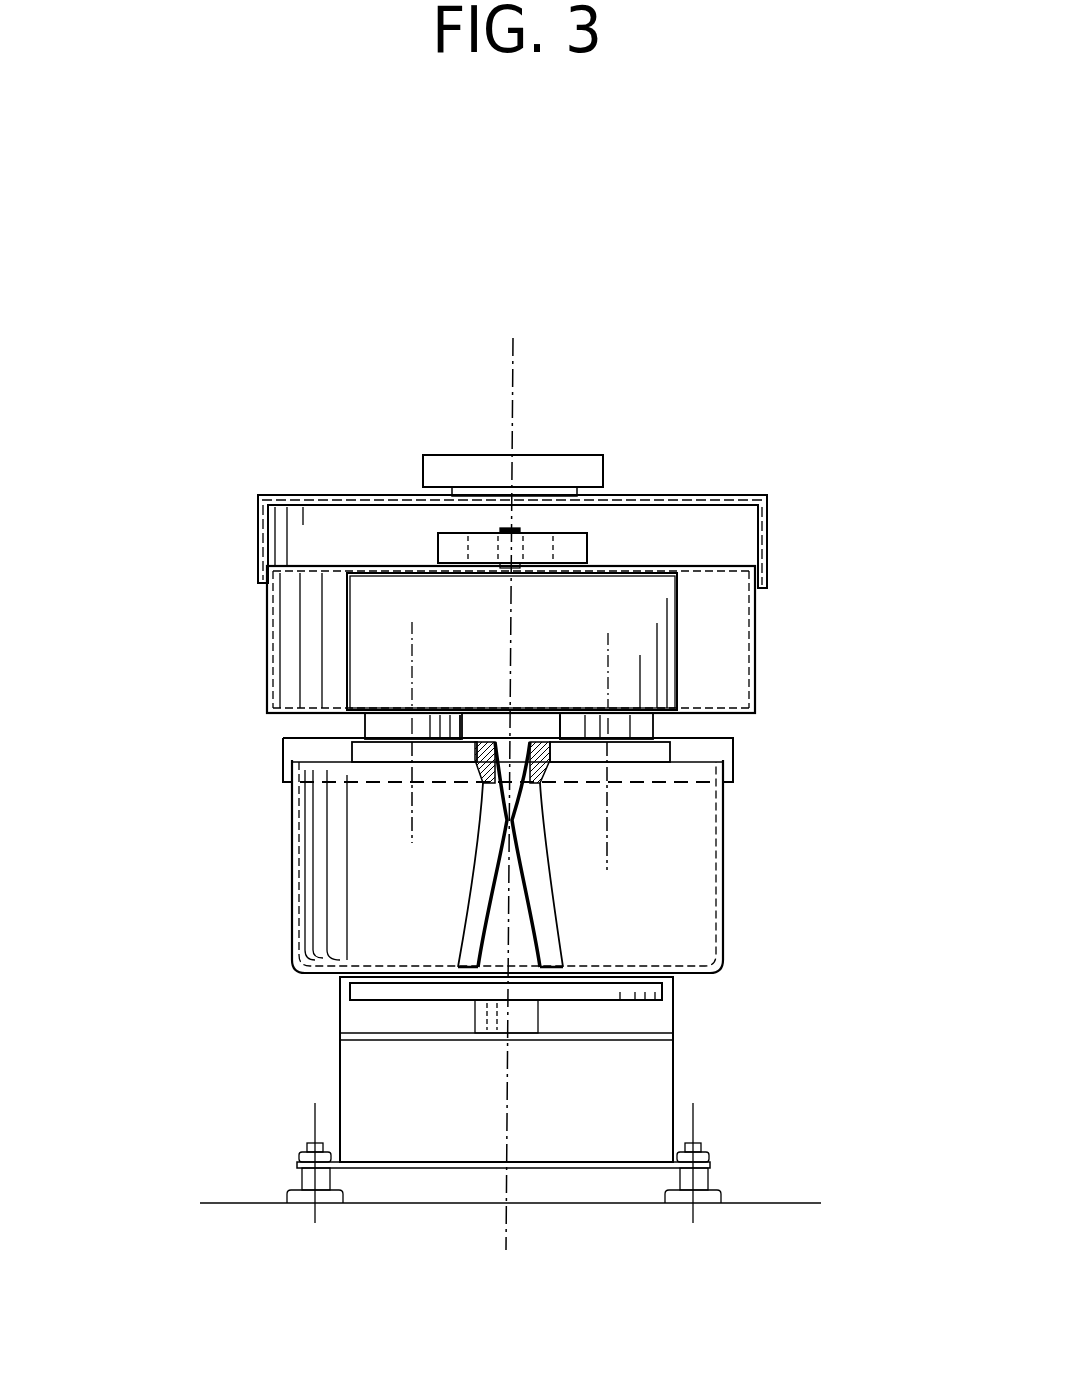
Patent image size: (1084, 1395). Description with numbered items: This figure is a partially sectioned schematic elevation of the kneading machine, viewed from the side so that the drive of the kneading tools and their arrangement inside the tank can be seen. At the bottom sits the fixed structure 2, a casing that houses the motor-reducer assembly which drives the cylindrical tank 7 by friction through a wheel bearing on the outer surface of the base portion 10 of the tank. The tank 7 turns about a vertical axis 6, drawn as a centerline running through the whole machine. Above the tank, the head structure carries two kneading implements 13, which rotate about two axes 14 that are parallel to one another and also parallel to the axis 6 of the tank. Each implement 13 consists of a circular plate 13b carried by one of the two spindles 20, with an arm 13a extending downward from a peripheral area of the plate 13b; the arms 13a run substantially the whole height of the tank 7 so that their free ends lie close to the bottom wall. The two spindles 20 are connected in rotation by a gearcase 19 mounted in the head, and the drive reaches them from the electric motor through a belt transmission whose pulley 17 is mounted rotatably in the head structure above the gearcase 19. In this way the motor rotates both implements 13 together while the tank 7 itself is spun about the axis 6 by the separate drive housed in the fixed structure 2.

The fixed structure 2 is at (683, 1082).
The vertical axis 6 is at (507, 1225).
The cylindrical tank 7 is at (725, 862).
The base portion 10 is at (438, 1003).
The kneading implements 13 is at (448, 913).
The arms 13a is at (476, 946).
The circular plates 13b is at (390, 747).
The axes 14 is at (405, 812).
The pulley 17 is at (575, 548).
The gearcase 19 is at (380, 620).
The spindles 20 is at (387, 722).